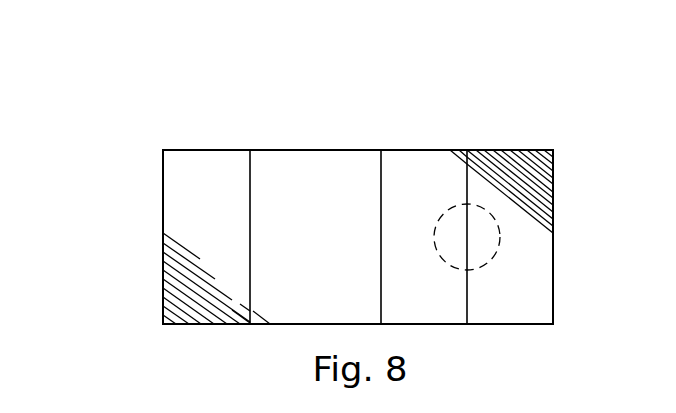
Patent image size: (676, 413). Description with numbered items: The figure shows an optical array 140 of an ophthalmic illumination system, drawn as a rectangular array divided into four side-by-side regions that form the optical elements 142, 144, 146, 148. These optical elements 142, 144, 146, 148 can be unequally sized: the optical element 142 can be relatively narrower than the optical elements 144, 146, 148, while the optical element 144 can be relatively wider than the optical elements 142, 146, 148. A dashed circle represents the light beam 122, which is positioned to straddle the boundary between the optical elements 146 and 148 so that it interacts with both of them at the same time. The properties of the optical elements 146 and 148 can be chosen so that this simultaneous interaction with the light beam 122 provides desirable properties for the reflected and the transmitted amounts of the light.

The optical array 140 is at (141, 237).
The optical element 142 is at (205, 158).
The optical element 144 is at (313, 158).
The optical element 146 is at (422, 158).
The optical element 148 is at (512, 158).
The light beam 122 is at (478, 268).